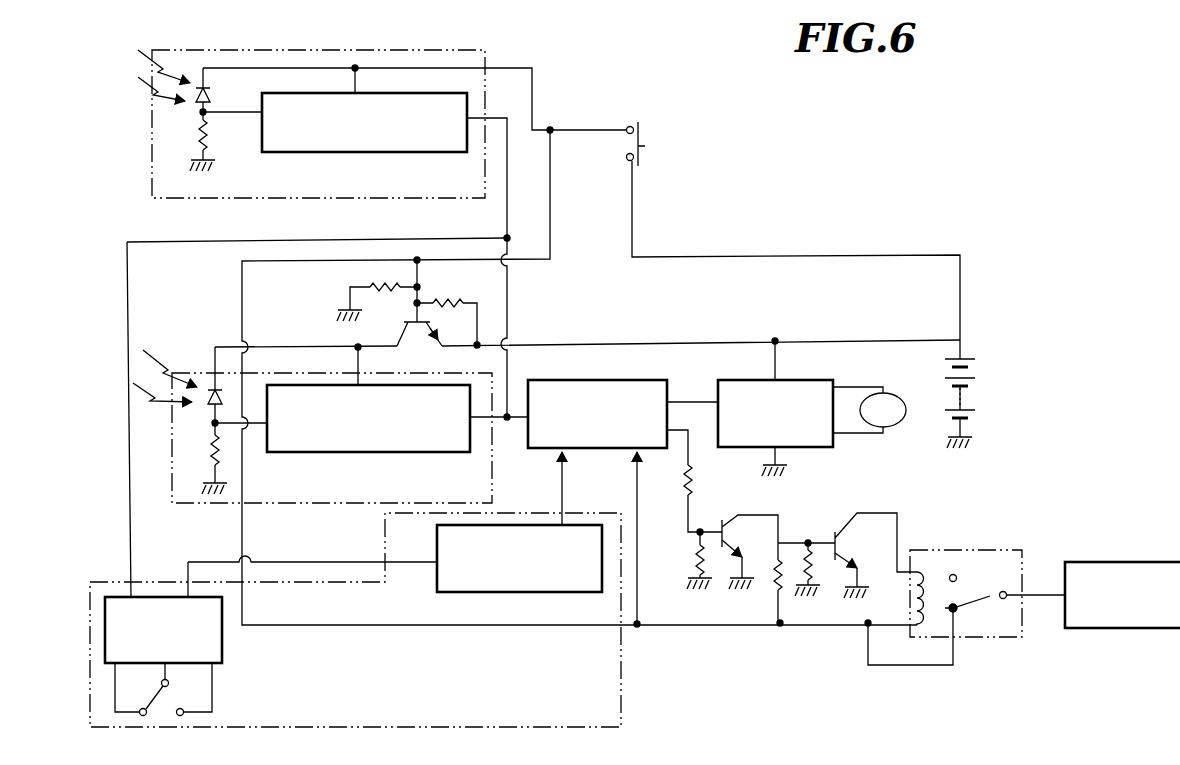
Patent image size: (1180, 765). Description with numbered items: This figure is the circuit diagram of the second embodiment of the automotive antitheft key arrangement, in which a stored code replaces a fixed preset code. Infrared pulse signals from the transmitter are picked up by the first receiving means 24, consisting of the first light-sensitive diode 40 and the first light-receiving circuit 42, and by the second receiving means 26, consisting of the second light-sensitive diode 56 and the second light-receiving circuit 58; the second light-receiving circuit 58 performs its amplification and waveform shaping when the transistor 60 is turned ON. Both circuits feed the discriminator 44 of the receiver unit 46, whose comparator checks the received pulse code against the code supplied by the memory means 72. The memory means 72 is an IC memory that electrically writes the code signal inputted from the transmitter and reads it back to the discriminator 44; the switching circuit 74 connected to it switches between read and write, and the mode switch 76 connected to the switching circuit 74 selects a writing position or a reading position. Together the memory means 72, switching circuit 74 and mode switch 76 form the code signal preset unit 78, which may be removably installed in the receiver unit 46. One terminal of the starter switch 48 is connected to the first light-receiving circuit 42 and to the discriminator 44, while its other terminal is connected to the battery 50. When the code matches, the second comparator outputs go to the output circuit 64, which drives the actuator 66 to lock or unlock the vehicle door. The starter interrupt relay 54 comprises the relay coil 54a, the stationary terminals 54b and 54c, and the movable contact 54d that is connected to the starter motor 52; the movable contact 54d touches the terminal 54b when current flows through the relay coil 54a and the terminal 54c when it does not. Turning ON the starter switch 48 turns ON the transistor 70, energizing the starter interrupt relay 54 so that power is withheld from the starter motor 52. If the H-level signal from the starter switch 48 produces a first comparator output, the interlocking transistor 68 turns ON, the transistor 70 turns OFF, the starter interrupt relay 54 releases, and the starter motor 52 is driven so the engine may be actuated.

The first receiving means 24 is at (320, 198).
The second receiving means 26 is at (343, 503).
The first light-sensitive diode 40 is at (202, 88).
The first light-receiving circuit 42 is at (395, 152).
The discriminator 44 is at (588, 380).
The receiver unit 46 is at (792, 569).
The starter switch 48 is at (647, 137).
The battery 50 is at (987, 362).
The starter motor 52 is at (1133, 562).
The starter interrupt relay 54 is at (962, 550).
The relay coil 54a is at (923, 570).
The stationary terminal 54b is at (957, 576).
The stationary terminal 54c is at (958, 611).
The movable contact 54d is at (992, 592).
The second light-sensitive diode 56 is at (210, 385).
The second light-receiving circuit 58 is at (405, 452).
The transistor 60 is at (413, 322).
The output circuit 64 is at (812, 380).
The actuator 66 is at (899, 395).
The transistor 68 is at (727, 520).
The transistor 70 is at (835, 528).
The memory means 72 is at (437, 585).
The switching circuit 74 is at (222, 643).
The mode switch 76 is at (157, 699).
The code signal preset unit 78 is at (622, 650).